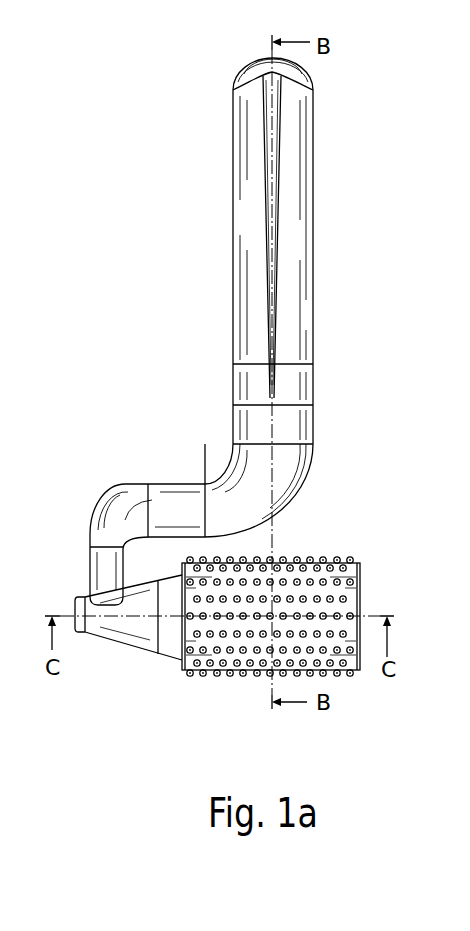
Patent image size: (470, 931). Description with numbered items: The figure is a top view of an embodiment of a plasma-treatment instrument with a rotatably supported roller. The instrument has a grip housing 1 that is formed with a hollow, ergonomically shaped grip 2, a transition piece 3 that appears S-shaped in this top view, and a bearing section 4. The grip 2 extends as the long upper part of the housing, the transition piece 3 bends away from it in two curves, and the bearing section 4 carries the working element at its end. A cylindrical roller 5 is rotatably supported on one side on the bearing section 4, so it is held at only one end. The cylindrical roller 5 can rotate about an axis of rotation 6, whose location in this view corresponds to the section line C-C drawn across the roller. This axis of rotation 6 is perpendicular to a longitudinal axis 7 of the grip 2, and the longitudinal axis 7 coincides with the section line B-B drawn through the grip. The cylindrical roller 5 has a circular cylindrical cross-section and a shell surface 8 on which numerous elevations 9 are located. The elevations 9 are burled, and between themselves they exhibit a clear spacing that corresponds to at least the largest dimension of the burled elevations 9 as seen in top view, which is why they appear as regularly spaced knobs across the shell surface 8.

The grip housing 1 is at (163, 463).
The grip 2 is at (313, 158).
The transition piece 3 is at (302, 492).
The bearing section 4 is at (150, 650).
The cylindrical roller 5 is at (374, 548).
The axis of rotation 6 is at (372, 612).
The longitudinal axis 7 is at (283, 555).
The shell surface 8 is at (217, 678).
The elevations 9 is at (262, 676).